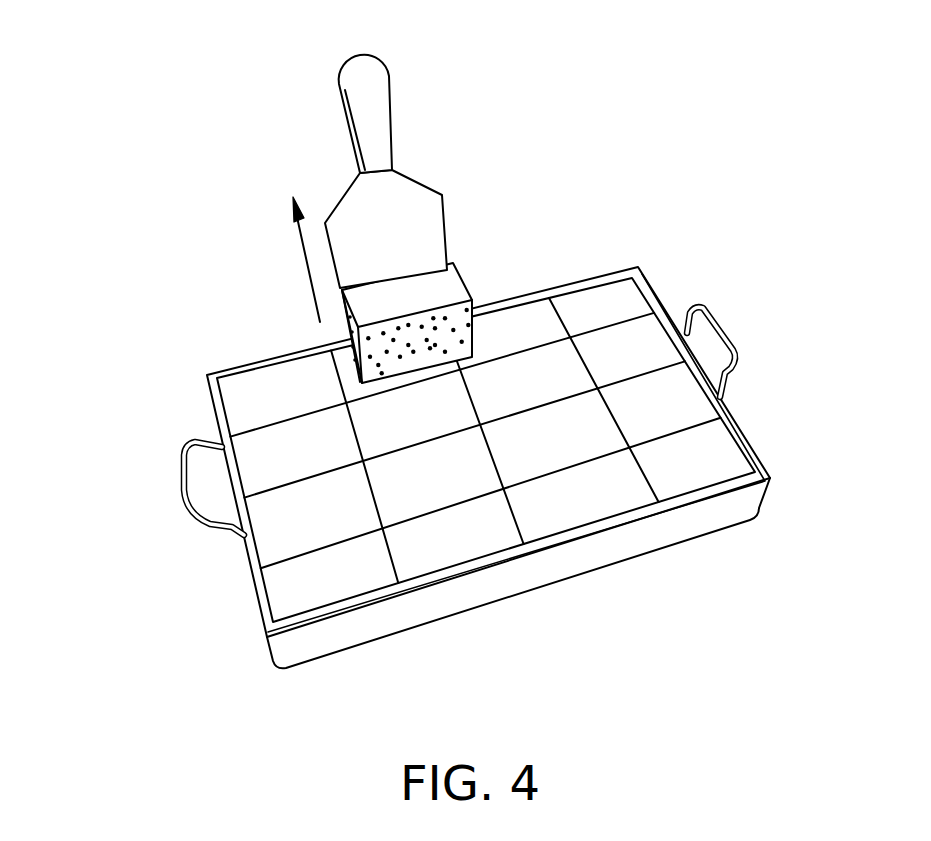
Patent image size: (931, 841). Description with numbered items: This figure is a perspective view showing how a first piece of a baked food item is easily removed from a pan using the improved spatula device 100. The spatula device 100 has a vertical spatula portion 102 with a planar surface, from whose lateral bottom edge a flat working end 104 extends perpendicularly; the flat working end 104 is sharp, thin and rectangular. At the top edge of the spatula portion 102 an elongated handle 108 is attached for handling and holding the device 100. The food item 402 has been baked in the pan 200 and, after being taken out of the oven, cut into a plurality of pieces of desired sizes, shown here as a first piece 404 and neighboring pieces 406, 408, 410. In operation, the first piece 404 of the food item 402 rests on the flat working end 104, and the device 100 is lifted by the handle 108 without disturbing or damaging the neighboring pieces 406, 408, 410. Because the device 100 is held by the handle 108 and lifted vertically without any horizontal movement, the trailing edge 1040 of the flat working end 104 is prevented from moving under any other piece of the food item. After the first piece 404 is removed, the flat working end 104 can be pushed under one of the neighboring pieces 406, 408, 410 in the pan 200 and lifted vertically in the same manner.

The spatula device 100 is at (435, 335).
The spatula portion 102 is at (347, 197).
The flat working end 104 is at (347, 265).
The handle 108 is at (365, 90).
The pan 200 is at (254, 583).
The food item 402 is at (448, 439).
The first piece 404 is at (443, 290).
The neighboring piece 406 is at (433, 432).
The neighboring piece 408 is at (397, 435).
The neighboring piece 410 is at (255, 410).
The trailing edge 1040 is at (443, 365).